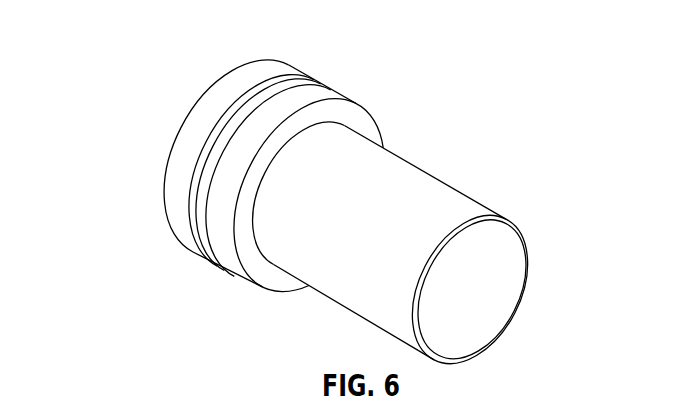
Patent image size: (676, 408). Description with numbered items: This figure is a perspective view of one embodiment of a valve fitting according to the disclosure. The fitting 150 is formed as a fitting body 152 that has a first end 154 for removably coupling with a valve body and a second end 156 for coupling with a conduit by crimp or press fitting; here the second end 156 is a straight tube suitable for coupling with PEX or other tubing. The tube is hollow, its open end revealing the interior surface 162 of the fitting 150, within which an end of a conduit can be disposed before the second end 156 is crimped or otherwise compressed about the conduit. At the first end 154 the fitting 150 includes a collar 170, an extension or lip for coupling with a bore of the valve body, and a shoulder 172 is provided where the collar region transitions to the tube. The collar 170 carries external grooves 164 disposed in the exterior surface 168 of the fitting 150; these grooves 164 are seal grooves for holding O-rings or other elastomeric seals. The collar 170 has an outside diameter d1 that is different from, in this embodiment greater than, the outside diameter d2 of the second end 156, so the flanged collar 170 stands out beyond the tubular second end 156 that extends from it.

The fitting 150 is at (118, 57).
The fitting body 152 is at (390, 243).
The first end 154 is at (270, 64).
The second end 156 is at (494, 212).
The interior surface 162 is at (463, 338).
The external groove 164 is at (292, 84).
The exterior surface 168 is at (358, 316).
The collar 170 is at (191, 252).
The shoulder 172 is at (357, 130).
The outside diameter of collar d1 is at (162, 241).
The outside diameter of second end d2 is at (535, 261).